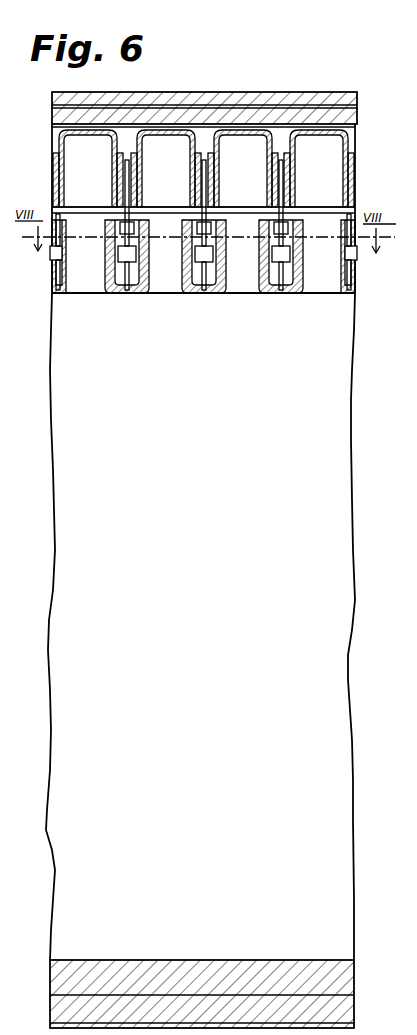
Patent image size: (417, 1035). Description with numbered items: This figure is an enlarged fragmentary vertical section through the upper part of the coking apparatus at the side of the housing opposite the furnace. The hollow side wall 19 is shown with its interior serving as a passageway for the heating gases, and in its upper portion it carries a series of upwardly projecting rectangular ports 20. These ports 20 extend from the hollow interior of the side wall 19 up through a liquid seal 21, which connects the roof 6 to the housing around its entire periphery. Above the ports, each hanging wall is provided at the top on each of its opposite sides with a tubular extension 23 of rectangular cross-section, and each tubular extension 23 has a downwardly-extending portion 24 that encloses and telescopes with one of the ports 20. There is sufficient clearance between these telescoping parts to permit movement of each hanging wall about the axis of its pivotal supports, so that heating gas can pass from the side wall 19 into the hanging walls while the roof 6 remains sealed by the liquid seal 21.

The roof 6 is at (357, 96).
The side wall 19 is at (354, 798).
The rectangular ports 20 is at (162, 283).
The liquid seal 21 is at (208, 293).
The tubular extension 23 is at (76, 167).
The downwardly-extending portion 24 is at (50, 252).